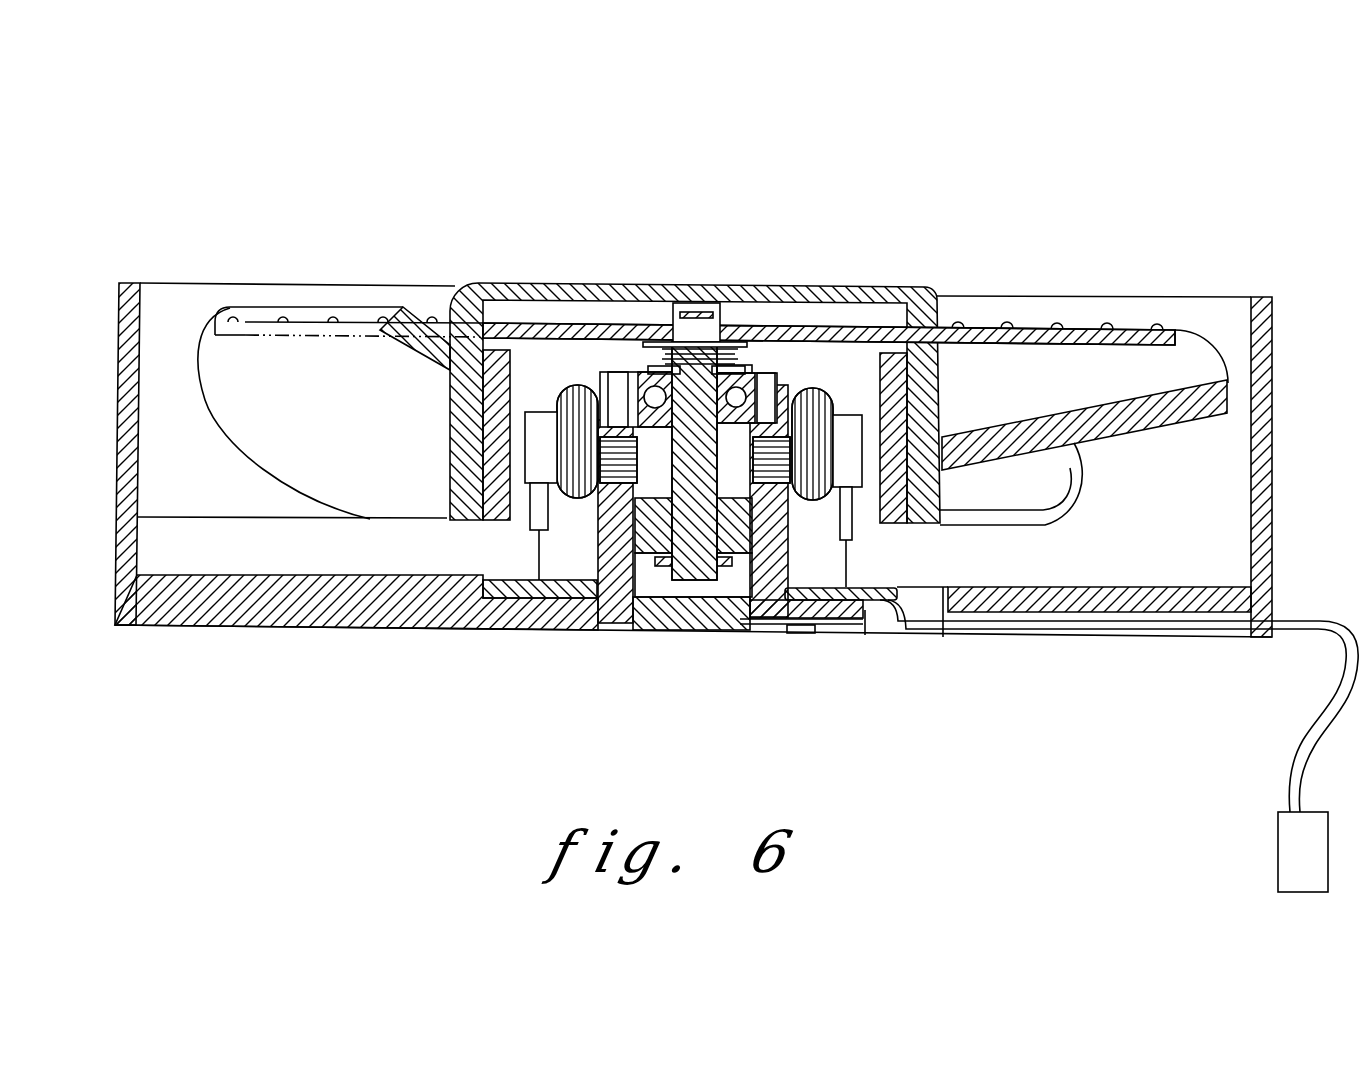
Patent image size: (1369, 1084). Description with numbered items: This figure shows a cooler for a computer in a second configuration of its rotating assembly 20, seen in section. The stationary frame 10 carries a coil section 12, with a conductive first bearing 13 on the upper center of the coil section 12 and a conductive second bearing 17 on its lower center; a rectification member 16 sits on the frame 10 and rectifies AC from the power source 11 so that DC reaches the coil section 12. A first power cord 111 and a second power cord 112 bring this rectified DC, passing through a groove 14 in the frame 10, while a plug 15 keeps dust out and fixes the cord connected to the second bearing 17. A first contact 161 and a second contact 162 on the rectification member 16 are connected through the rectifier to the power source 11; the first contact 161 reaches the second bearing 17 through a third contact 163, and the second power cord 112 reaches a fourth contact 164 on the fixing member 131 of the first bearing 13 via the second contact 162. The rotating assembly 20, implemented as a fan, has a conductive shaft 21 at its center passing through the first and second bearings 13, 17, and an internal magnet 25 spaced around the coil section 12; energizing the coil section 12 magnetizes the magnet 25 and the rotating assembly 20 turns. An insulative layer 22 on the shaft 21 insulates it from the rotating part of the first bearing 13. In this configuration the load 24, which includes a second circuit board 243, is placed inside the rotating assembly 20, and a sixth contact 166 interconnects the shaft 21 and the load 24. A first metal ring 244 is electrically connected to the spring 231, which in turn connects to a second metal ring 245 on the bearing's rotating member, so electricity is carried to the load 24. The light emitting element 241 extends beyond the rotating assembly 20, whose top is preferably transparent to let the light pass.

The frame 10 is at (288, 628).
The power source 11 is at (1292, 847).
The first power cord 111 is at (1297, 742).
The second power cord 112 is at (1323, 622).
The coil section 12 is at (563, 507).
The first bearing 13 is at (633, 457).
The fixing member 131 is at (655, 397).
The groove 14 is at (923, 630).
The plug 15 is at (667, 623).
The rectification member 16 is at (805, 590).
The first contact 161 is at (877, 620).
The second contact 162 is at (890, 620).
The third contact 163 is at (748, 538).
The fourth contact 164 is at (745, 382).
The sixth contact 166 is at (728, 301).
The second bearing 17 is at (652, 528).
The rotating assembly 20 is at (950, 385).
The shaft 21 is at (505, 490).
The insulative layer 22 is at (673, 358).
The spring 231 is at (493, 297).
The load 24 is at (766, 316).
The light emitting element 241 is at (1162, 327).
The second circuit board 243 is at (647, 330).
The first metal ring 244 is at (562, 325).
The second metal ring 245 is at (667, 367).
The magnet 25 is at (492, 522).